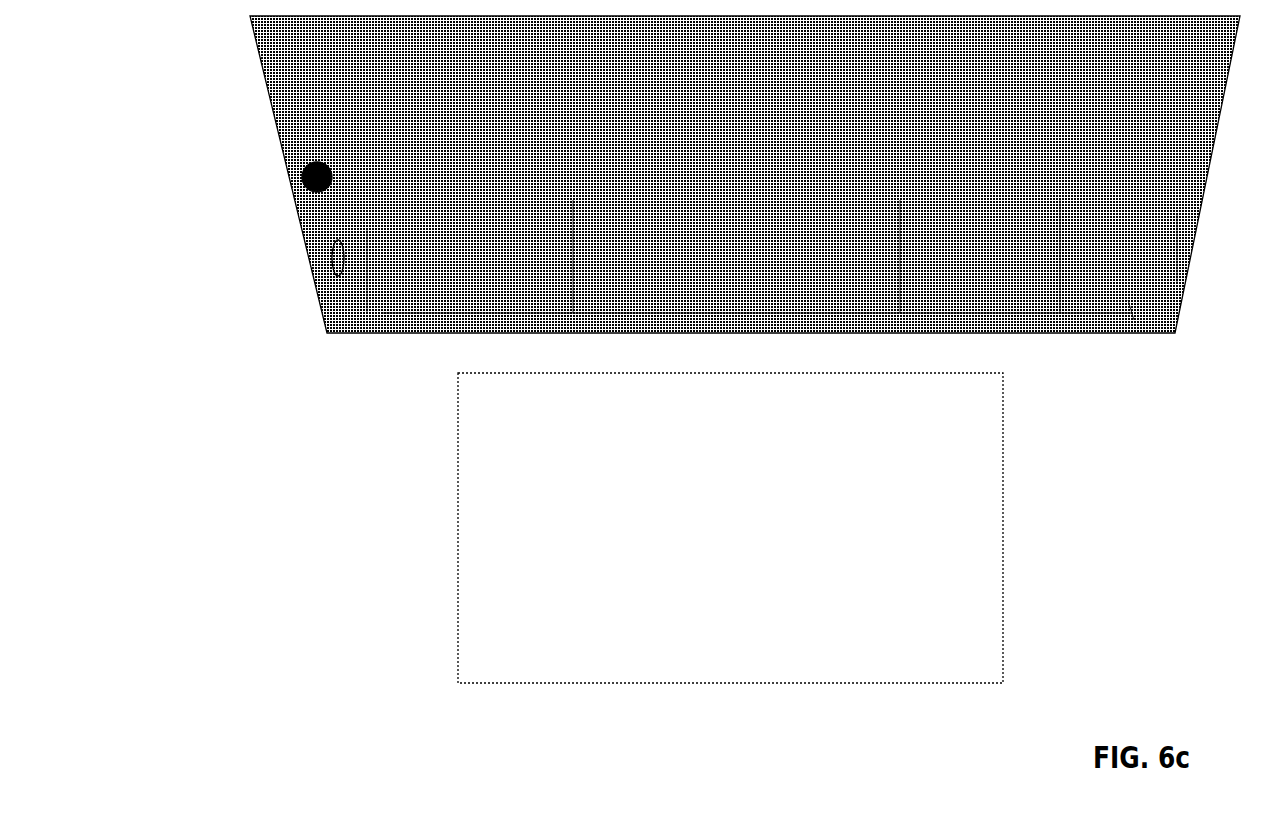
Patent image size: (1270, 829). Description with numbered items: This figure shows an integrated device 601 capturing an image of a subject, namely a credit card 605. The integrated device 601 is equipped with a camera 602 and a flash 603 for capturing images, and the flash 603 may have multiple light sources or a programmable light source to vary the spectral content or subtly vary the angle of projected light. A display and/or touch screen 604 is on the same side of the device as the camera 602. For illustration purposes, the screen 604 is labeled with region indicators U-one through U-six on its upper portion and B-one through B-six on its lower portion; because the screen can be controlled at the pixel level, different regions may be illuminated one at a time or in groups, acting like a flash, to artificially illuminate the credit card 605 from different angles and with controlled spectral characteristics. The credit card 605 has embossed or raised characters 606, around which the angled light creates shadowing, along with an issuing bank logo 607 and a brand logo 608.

The integrated device 601 is at (1077, 336).
The camera 602 is at (300, 176).
The flash 603 is at (318, 256).
The display and/or touch screen 604 is at (1128, 300).
The credit card 605 is at (455, 640).
The embossed or raised characters 606 is at (838, 522).
The issuing bank logo 607 is at (478, 432).
The brand logo 608 is at (927, 666).